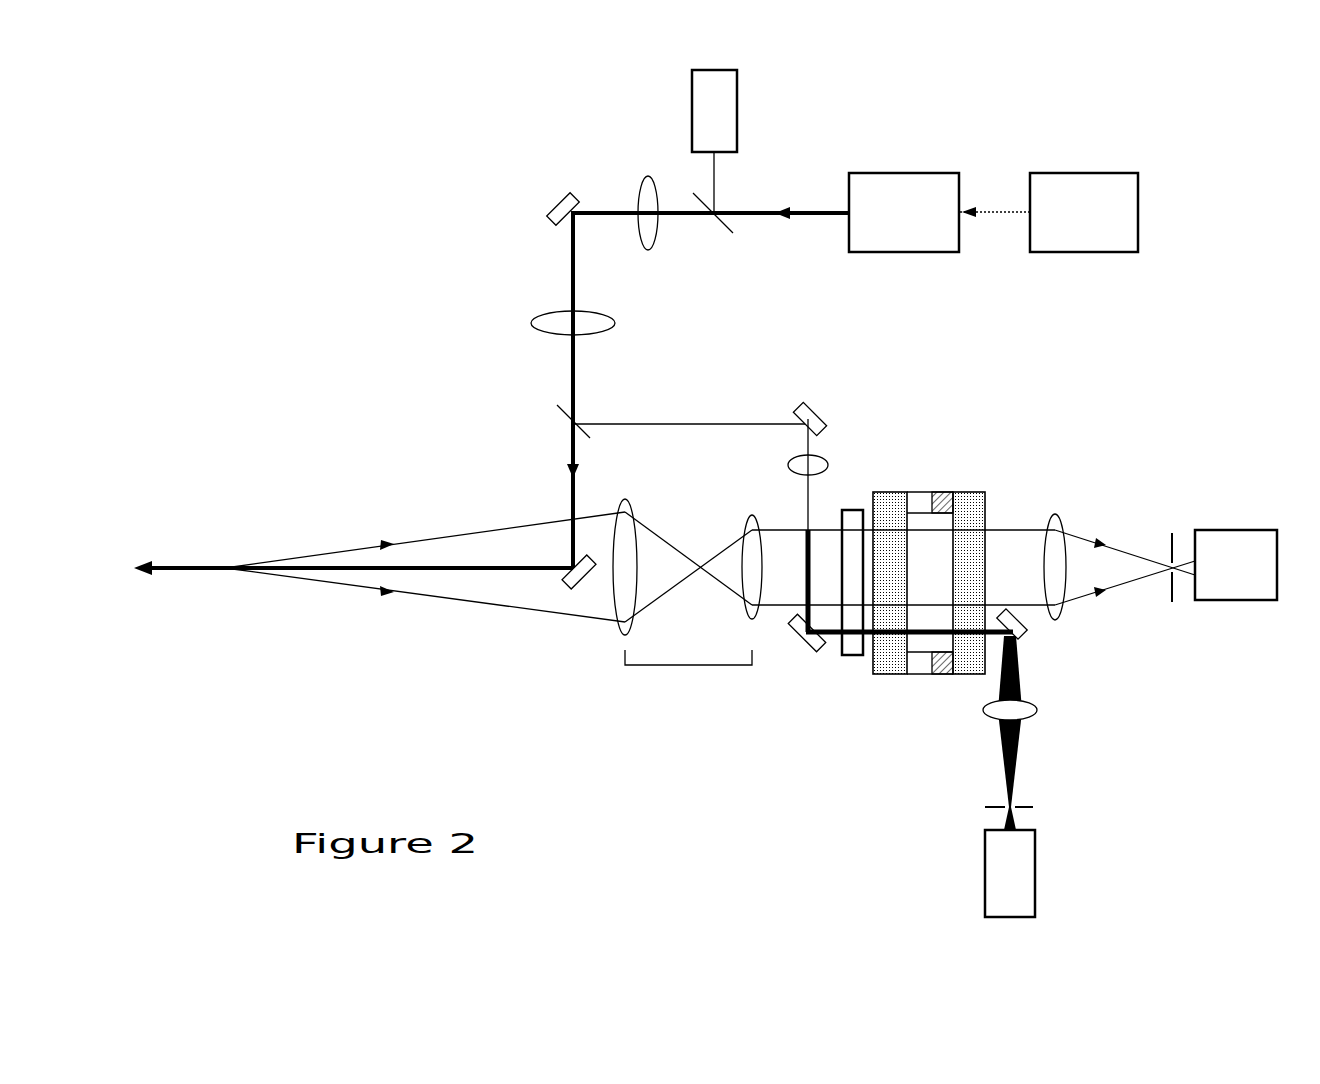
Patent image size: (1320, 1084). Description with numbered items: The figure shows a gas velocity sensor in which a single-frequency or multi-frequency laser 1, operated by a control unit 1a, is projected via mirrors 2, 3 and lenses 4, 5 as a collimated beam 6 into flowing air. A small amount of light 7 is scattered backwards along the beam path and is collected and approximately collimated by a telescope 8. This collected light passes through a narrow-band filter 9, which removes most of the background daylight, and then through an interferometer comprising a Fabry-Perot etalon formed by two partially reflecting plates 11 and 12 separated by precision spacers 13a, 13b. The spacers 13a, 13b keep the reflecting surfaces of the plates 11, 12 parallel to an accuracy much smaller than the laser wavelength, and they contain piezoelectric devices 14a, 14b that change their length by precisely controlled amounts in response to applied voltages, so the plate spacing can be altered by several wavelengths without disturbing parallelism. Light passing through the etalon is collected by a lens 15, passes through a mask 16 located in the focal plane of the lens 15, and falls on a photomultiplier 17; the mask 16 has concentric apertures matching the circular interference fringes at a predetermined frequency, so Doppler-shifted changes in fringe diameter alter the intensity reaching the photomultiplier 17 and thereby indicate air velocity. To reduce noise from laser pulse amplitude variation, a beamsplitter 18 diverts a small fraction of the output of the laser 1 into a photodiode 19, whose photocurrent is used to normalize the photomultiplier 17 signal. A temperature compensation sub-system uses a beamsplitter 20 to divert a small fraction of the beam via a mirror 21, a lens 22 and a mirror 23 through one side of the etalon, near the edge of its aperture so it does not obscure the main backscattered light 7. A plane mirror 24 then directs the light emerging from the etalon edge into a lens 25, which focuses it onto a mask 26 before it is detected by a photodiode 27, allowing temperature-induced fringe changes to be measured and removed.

The laser 1 is at (913, 195).
The control unit 1a is at (1075, 193).
The mirror 2 is at (553, 205).
The mirror 3 is at (560, 560).
The lens 4 is at (628, 180).
The lens 5 is at (528, 317).
The collimated beam 6 is at (348, 540).
The backscattered light 7 is at (468, 607).
The telescope 8 is at (687, 606).
The narrow-band filter 9 is at (848, 657).
The partially reflecting plate 11 is at (883, 495).
The partially reflecting plate 12 is at (967, 493).
The precision spacer 13a is at (917, 673).
The precision spacer 13b is at (915, 495).
The piezoelectric device 14a is at (940, 673).
The piezoelectric device 14b is at (940, 493).
The lens 15 is at (1062, 505).
The mask 16 is at (1173, 615).
The photomultiplier 17 is at (1232, 540).
The beamsplitter 18 is at (718, 240).
The photodiode 19 is at (707, 95).
The beamsplitter 20 is at (547, 412).
The mirror 21 is at (802, 402).
The lens 22 is at (787, 465).
The mirror 23 is at (803, 650).
The plane mirror 24 is at (1035, 637).
The lens 25 is at (1035, 718).
The mask 26 is at (1050, 805).
The photodiode 27 is at (1017, 862).